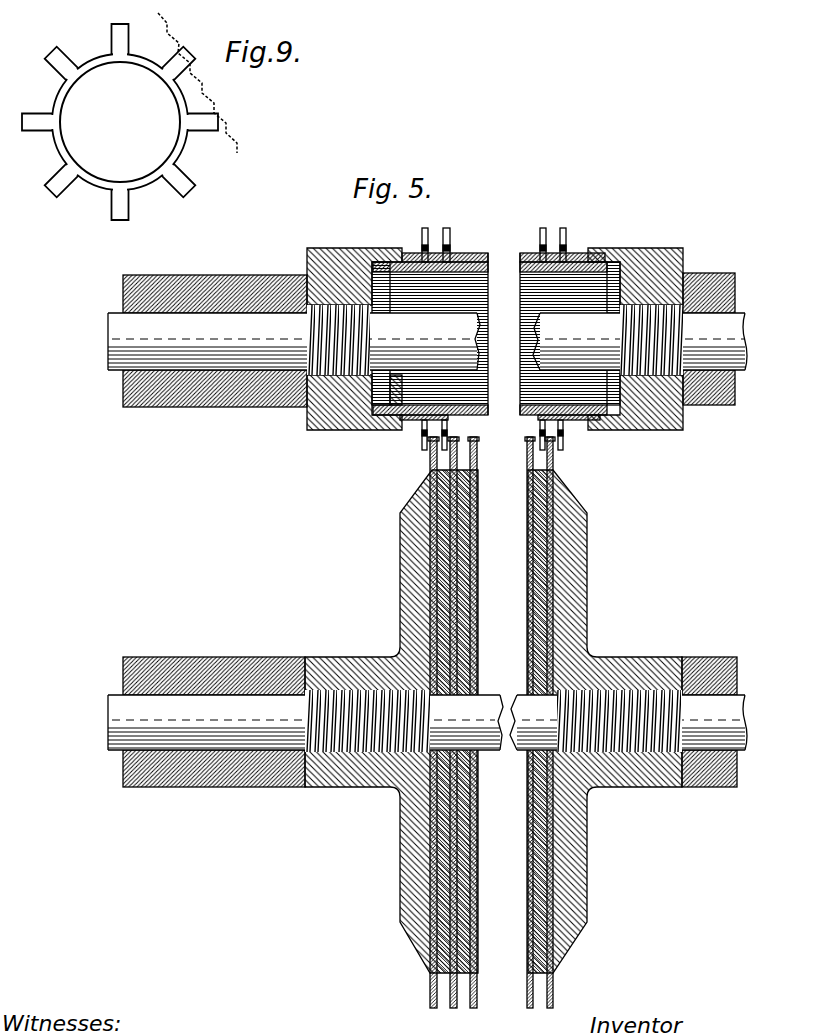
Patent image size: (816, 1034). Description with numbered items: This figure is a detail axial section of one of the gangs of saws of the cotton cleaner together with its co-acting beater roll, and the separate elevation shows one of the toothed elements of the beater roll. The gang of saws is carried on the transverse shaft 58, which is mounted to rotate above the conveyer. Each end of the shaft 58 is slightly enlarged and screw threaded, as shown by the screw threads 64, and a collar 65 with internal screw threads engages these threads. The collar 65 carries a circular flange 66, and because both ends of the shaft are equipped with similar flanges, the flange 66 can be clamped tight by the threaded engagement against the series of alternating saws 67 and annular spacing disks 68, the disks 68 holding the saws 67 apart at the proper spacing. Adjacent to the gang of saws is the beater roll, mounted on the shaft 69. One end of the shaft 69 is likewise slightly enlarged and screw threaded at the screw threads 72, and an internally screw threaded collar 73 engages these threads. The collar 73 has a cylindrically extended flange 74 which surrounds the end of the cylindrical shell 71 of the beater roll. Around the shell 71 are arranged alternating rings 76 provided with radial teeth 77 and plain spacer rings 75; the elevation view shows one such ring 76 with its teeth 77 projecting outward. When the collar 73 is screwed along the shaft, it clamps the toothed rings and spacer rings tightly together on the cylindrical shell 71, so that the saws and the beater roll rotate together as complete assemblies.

In FIG. 5, the transverse shaft 58 is at (628, 722).
In FIG. 5, the screw threads 64 is at (341, 752).
In FIG. 5, the collar 65 is at (378, 785).
In FIG. 5, the circular flange 66 is at (412, 882).
In FIG. 5, the saw 67 is at (477, 452).
In FIG. 5, the annular spacing disk 68 is at (462, 536).
In FIG. 5, the beater roll shaft 69 is at (640, 339).
In FIG. 5, the cylindrical shell 71 is at (473, 261).
In FIG. 5, the screw threads 72 is at (292, 407).
In FIG. 5, the screw threaded collar 73 is at (358, 398).
In FIG. 5, the cylindrically extended flange 74 is at (385, 422).
In FIG. 5, the plain spacer ring 75 is at (453, 404).
In FIG. 9, the ring 76 is at (171, 158).
In FIG. 5, the ring 76 is at (450, 256).
In FIG. 9, the radial teeth 77 is at (173, 190).
In FIG. 5, the radial teeth 77 is at (447, 235).